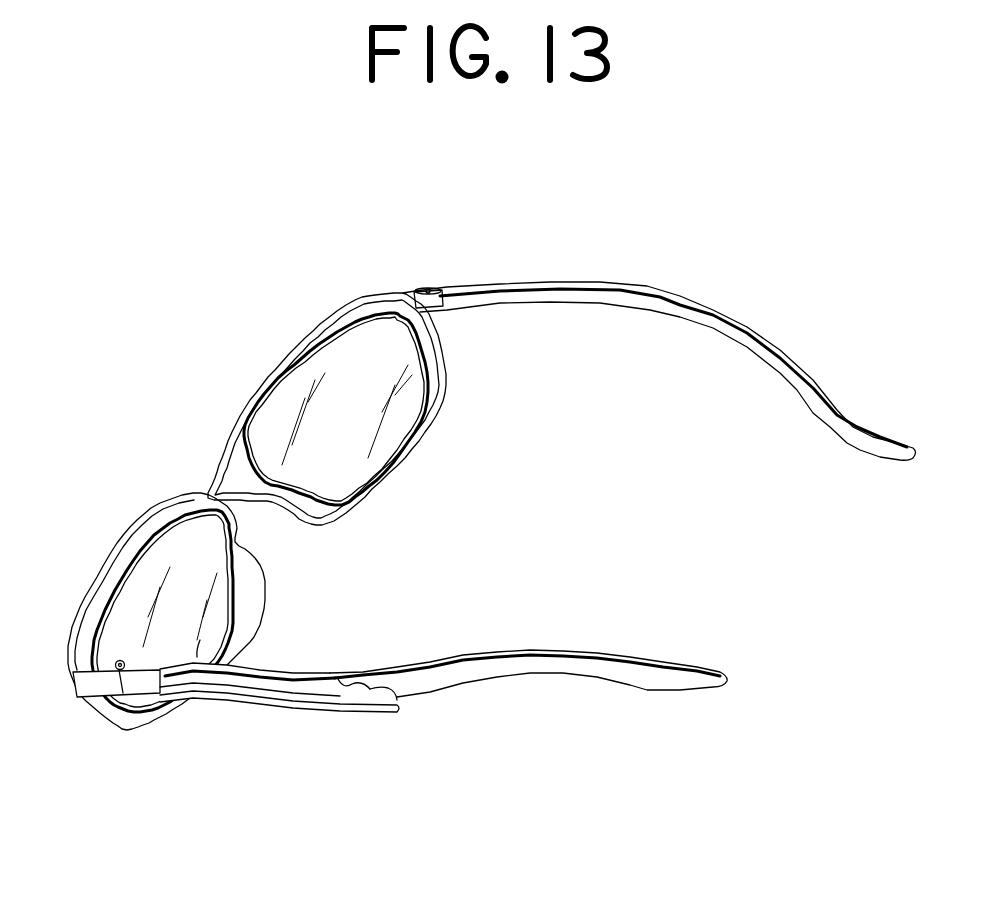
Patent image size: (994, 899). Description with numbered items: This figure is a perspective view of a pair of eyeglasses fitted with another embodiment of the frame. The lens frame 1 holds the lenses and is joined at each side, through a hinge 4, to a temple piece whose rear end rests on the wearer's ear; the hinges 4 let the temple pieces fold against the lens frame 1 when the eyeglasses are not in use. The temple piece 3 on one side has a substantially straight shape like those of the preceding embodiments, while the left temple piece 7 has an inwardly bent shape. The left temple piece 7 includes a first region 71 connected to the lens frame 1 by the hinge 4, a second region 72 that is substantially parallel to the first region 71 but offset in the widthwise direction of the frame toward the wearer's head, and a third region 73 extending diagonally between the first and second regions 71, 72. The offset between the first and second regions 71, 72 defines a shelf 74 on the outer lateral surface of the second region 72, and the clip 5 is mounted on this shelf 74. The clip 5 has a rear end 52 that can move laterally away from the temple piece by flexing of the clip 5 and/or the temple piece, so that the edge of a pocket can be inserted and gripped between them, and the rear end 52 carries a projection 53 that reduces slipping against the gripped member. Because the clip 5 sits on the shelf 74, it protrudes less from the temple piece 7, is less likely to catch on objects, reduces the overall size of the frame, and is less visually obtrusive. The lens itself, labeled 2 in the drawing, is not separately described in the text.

The lens frame 1 is at (233, 407).
The lens 2 is at (390, 415).
The temple piece 3 is at (630, 283).
The hinge 4 is at (432, 312).
The clip 5 is at (230, 704).
The left temple piece 7 is at (498, 679).
The first region 71 is at (137, 713).
The second region 72 is at (327, 667).
The third region 73 is at (200, 640).
The shelf 74 is at (268, 706).
The rear end of the clip 52 is at (400, 703).
The projection 53 is at (357, 684).